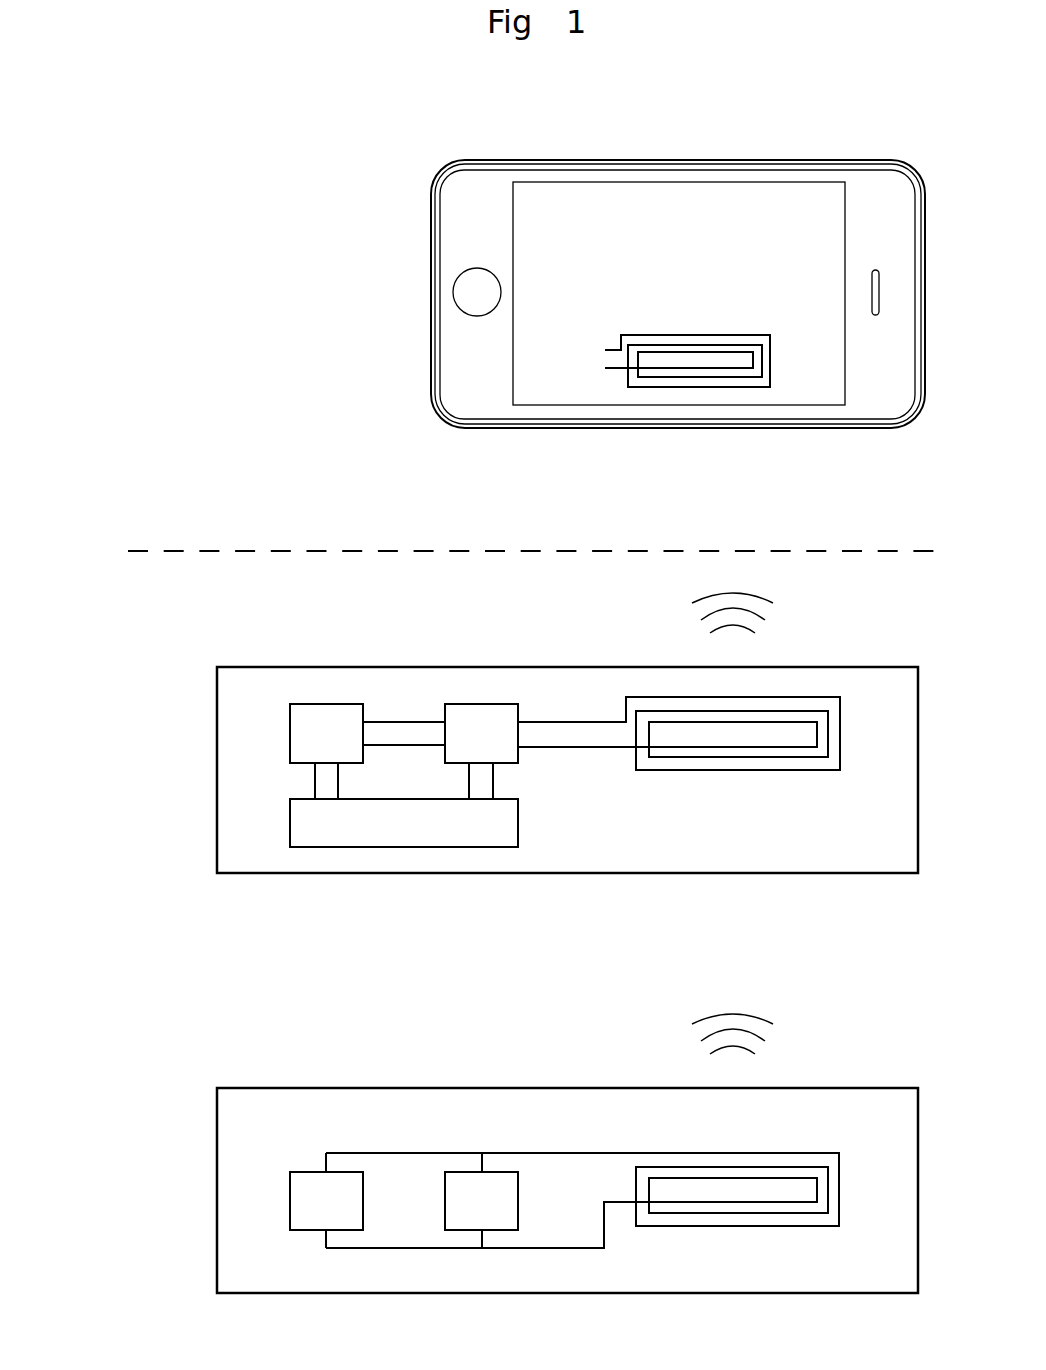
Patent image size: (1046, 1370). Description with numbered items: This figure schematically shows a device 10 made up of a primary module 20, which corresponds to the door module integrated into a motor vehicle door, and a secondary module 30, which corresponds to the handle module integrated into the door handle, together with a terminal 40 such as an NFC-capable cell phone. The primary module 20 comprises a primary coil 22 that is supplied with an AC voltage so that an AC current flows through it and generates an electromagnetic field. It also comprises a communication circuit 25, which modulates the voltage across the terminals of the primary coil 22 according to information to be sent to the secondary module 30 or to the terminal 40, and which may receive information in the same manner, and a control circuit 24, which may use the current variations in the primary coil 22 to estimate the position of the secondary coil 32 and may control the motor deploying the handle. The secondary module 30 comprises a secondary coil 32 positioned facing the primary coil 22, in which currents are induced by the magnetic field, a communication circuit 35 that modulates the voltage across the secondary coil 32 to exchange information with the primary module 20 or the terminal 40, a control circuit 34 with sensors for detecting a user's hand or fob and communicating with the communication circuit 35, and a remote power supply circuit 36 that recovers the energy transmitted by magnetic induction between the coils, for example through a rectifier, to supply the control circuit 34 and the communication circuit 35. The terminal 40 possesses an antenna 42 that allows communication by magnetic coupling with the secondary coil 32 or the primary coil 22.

The device 10 is at (138, 1026).
The primary module 20 is at (347, 1088).
The primary coil 22 is at (778, 1153).
The control circuit 24 is at (343, 1214).
The communication circuit 25 is at (498, 1214).
The secondary module 30 is at (347, 667).
The secondary coil 32 is at (773, 712).
The control circuit 34 is at (421, 836).
The communication circuit 35 is at (343, 746).
The remote power supply circuit 36 is at (498, 746).
The terminal 40 is at (730, 160).
The antenna 42 is at (700, 387).